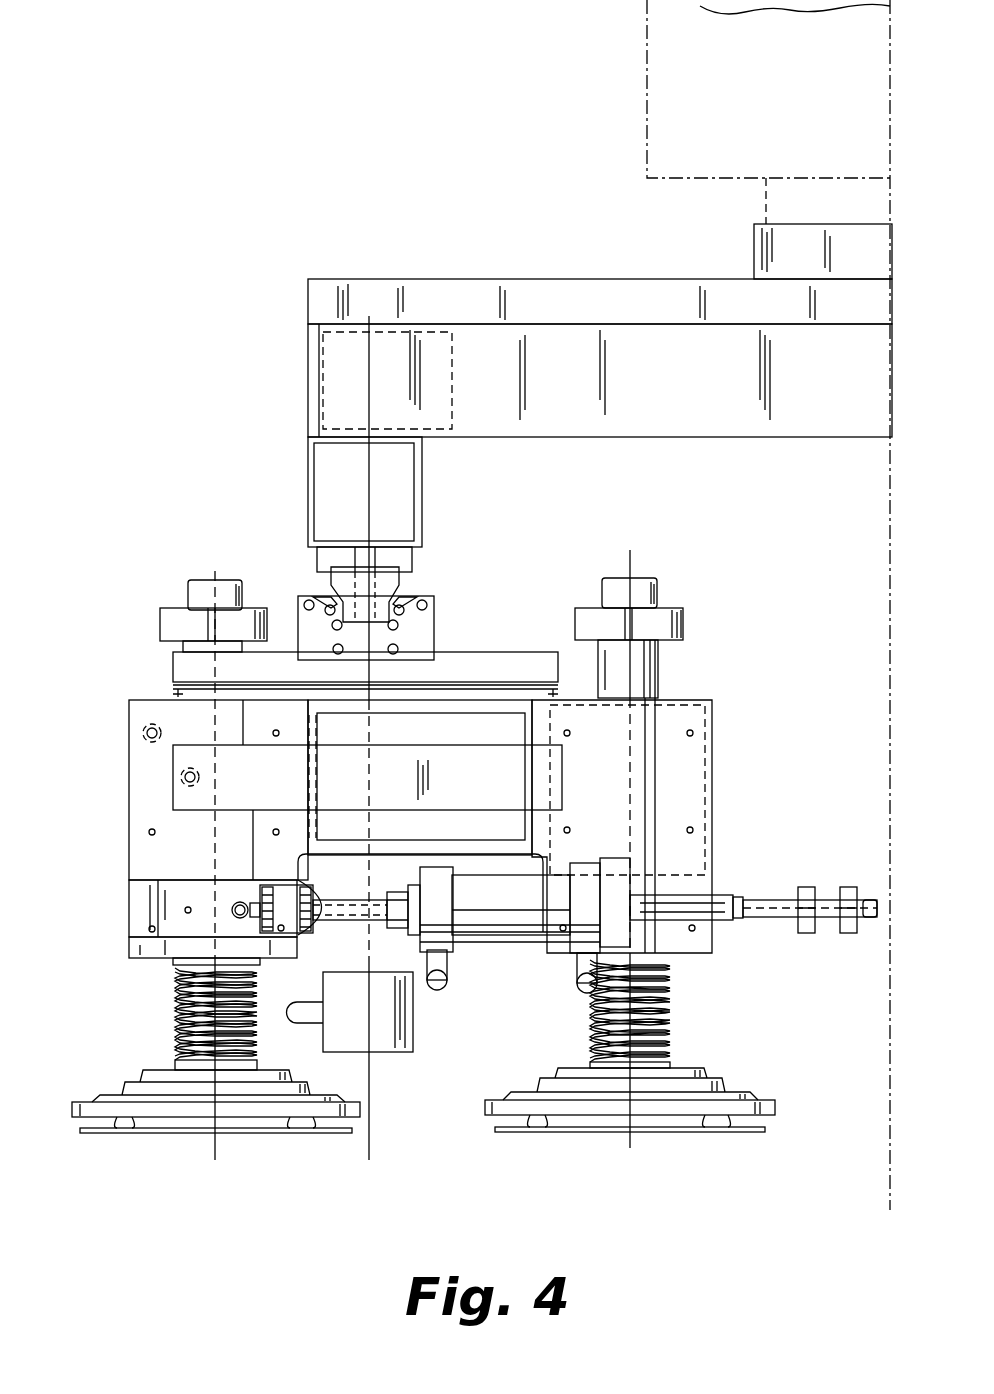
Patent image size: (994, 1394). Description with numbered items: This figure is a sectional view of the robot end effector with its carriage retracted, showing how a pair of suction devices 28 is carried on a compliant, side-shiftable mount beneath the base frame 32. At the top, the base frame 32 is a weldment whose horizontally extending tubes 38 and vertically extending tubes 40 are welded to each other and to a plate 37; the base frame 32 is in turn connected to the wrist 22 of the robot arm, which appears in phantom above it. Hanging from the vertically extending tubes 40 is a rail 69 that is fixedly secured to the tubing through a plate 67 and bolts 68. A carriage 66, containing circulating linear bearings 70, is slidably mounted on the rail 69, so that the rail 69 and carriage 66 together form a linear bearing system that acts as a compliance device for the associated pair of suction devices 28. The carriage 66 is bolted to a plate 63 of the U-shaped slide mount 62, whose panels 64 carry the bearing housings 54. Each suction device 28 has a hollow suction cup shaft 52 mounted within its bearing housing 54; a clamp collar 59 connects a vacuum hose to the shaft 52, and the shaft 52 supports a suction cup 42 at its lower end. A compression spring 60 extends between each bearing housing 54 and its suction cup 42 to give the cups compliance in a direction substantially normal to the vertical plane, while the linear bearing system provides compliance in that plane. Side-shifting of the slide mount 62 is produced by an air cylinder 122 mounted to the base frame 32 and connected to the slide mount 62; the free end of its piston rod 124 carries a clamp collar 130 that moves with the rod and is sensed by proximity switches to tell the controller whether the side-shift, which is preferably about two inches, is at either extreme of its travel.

The wrist 22 is at (647, 68).
The base frame 32 is at (345, 270).
The plate 37 is at (440, 278).
The horizontally extending tubes 38 is at (605, 437).
The vertically extending tubes 40 is at (422, 486).
The suction cup 42 is at (93, 1093).
The suction cup shaft 52 is at (186, 589).
The bearing housing 54 is at (697, 793).
The clamp collar 59 is at (161, 623).
The compression spring 60 is at (175, 1017).
The slide mount 62 is at (482, 868).
The plate 63 is at (531, 652).
The panels 64 is at (129, 737).
The carriage 66 is at (434, 635).
The plate 67 is at (316, 567).
The bolts 68 is at (392, 562).
The rail 69 is at (397, 587).
The circulating linear bearings 70 is at (334, 648).
The air cylinder 122 is at (510, 947).
The piston rod 124 is at (772, 897).
The clamp collar 130 is at (850, 887).
The suction devices 28 is at (358, 1091).